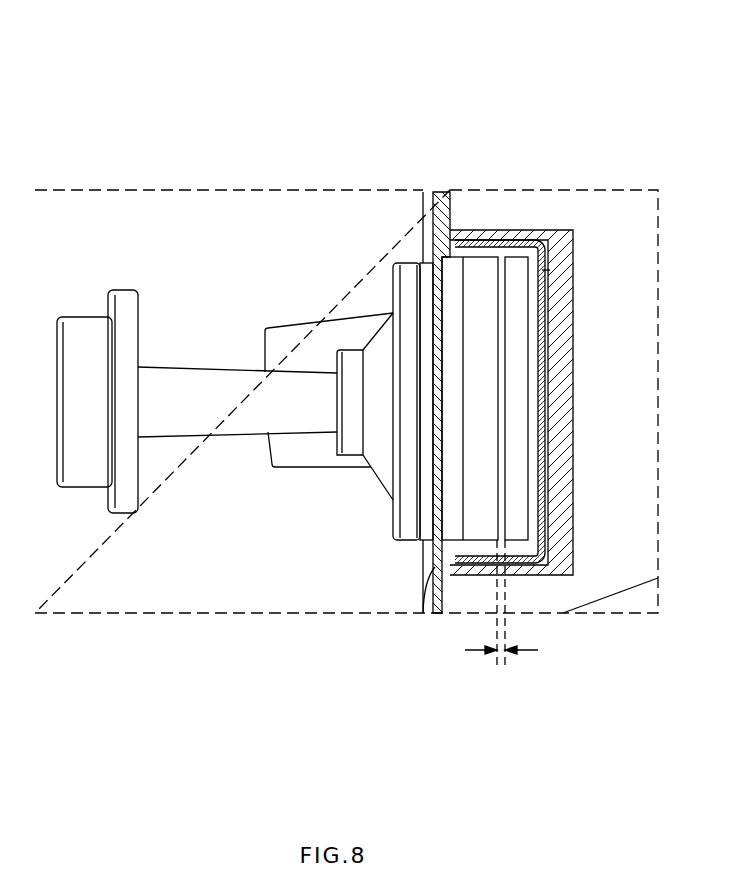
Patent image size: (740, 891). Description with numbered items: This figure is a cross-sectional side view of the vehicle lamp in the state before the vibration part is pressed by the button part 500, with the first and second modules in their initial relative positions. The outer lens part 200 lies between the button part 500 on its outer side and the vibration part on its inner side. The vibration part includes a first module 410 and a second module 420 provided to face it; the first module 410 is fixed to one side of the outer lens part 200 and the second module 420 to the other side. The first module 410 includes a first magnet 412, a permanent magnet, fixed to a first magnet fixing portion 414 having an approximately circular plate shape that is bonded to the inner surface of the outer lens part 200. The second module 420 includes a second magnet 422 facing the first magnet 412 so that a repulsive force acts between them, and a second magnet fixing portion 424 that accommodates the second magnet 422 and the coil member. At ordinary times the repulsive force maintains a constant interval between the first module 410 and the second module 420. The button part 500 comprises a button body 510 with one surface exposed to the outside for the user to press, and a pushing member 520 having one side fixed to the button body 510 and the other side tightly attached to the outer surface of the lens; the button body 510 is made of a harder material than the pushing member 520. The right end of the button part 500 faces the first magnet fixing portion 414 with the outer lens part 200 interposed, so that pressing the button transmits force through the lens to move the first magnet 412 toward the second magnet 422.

The outer lens part 200 is at (440, 237).
The first module 410 is at (505, 85).
The first magnet 412 is at (481, 280).
The first magnet fixing portion 414 is at (455, 282).
The second module 420 is at (628, 85).
The second magnet 422 is at (520, 270).
The second magnet fixing portion 424 is at (542, 300).
The button part 500 is at (165, 282).
The button body 510 is at (178, 418).
The pushing member 520 is at (378, 437).